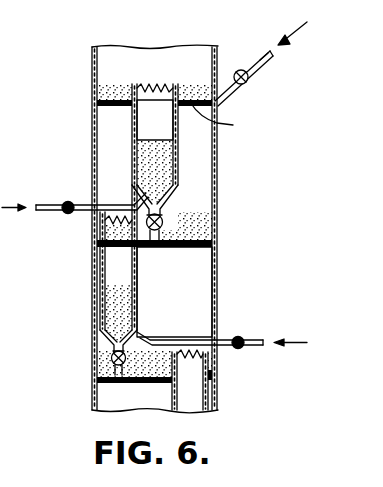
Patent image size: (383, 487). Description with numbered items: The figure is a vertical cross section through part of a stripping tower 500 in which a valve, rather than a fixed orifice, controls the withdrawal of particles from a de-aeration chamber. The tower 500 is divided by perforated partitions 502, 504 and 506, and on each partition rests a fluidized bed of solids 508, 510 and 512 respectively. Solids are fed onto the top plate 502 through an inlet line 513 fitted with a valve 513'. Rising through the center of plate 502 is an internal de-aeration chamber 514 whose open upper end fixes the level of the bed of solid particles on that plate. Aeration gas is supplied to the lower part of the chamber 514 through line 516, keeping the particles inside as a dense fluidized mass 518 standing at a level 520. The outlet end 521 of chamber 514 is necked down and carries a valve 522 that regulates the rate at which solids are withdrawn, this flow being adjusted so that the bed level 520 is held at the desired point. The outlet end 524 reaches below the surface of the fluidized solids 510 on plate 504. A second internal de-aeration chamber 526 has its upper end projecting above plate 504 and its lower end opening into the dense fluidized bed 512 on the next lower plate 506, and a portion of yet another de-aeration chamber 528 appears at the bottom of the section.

The stripping tower 500 is at (215, 287).
The perforated partition 502 is at (231, 93).
The perforated partition 504 is at (200, 246).
The perforated partition 506 is at (160, 385).
The fluidized bed of solids 508 is at (194, 86).
The fluidized bed of solids 510 is at (197, 221).
The fluidized bed of solids 512 is at (149, 360).
The inlet line 513 is at (283, 59).
The valve 513' is at (252, 46).
The internal de-aeration chamber 514 is at (130, 132).
The line 516 is at (80, 200).
The dense fluidized mass 518 is at (178, 170).
The level 520 is at (150, 130).
The outlet end 521 is at (165, 212).
The valve 522 is at (158, 244).
The outlet end 524 is at (150, 250).
The internal de-aeration chamber 526 is at (100, 286).
The de-aeration chamber 528 is at (208, 364).